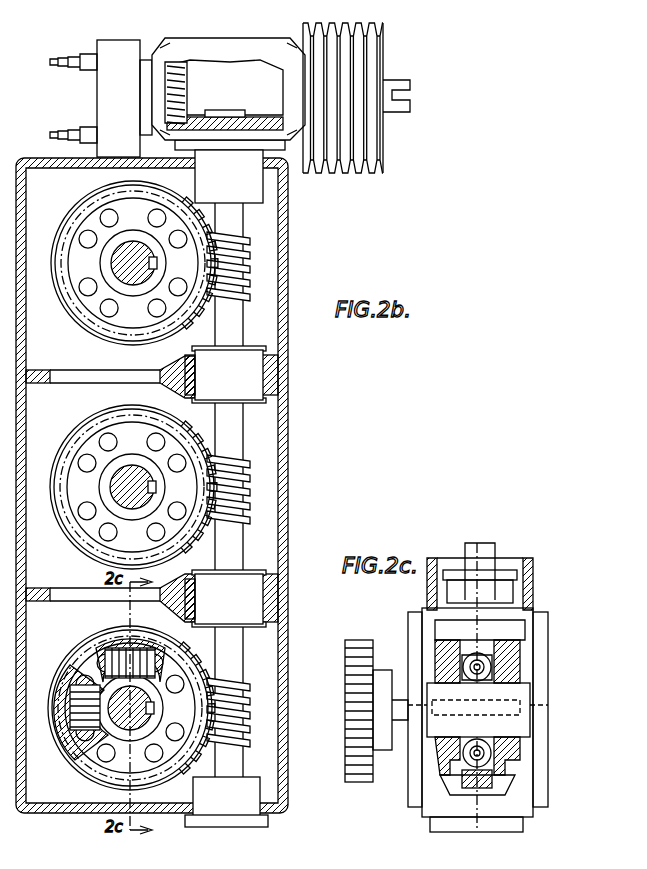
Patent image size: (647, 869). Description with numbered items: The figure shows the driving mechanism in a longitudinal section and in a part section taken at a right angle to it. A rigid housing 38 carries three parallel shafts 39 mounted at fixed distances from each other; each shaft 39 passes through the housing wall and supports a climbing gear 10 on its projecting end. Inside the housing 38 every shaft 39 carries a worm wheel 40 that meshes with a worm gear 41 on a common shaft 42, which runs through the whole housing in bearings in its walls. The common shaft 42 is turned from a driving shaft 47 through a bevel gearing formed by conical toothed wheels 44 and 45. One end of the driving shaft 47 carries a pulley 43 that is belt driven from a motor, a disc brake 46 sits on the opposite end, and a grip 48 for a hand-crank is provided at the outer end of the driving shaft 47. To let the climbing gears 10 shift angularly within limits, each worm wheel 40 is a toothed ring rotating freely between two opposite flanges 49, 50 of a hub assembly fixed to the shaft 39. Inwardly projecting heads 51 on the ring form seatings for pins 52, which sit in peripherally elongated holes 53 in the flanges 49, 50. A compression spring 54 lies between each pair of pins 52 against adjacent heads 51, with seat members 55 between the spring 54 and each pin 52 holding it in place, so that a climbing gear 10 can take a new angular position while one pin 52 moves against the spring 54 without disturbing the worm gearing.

In FIG. 2C, the climbing gear 10 is at (357, 640).
In FIG. 2B, the rigid housing 38 is at (292, 458).
In FIG. 2C, the rigid housing 38 is at (548, 636).
In FIG. 2B, the shaft 39 is at (128, 740).
In FIG. 2C, the shaft 39 is at (518, 722).
In FIG. 2B, the worm wheel 40 is at (200, 745).
In FIG. 2C, the worm wheel 40 is at (495, 785).
In FIG. 2B, the worm gear 41 is at (238, 697).
In FIG. 2B, the common shaft 42 is at (232, 665).
In FIG. 2C, the common shaft 42 is at (490, 552).
In FIG. 2B, the pulley 43 is at (340, 165).
In FIG. 2B, the conical toothed wheel 44 is at (270, 118).
In FIG. 2B, the conical toothed wheel 45 is at (185, 75).
In FIG. 2B, the disc brake 46 is at (97, 91).
In FIG. 2B, the driving shaft 47 is at (227, 88).
In FIG. 2B, the grip 48 is at (400, 97).
In FIG. 2C, the flange 49 is at (445, 660).
In FIG. 2B, the flange 50 is at (92, 758).
In FIG. 2C, the flange 50 is at (505, 768).
In FIG. 2B, the head 51 is at (80, 670).
In FIG. 2B, the pin 52 is at (68, 680).
In FIG. 2C, the pin 52 is at (515, 660).
In FIG. 2B, the hole 53 is at (178, 735).
In FIG. 2C, the hole 53 is at (500, 655).
In FIG. 2B, the compression spring 54 is at (132, 648).
In FIG. 2C, the compression spring 54 is at (462, 655).
In FIG. 2B, the seat member 55 is at (160, 655).